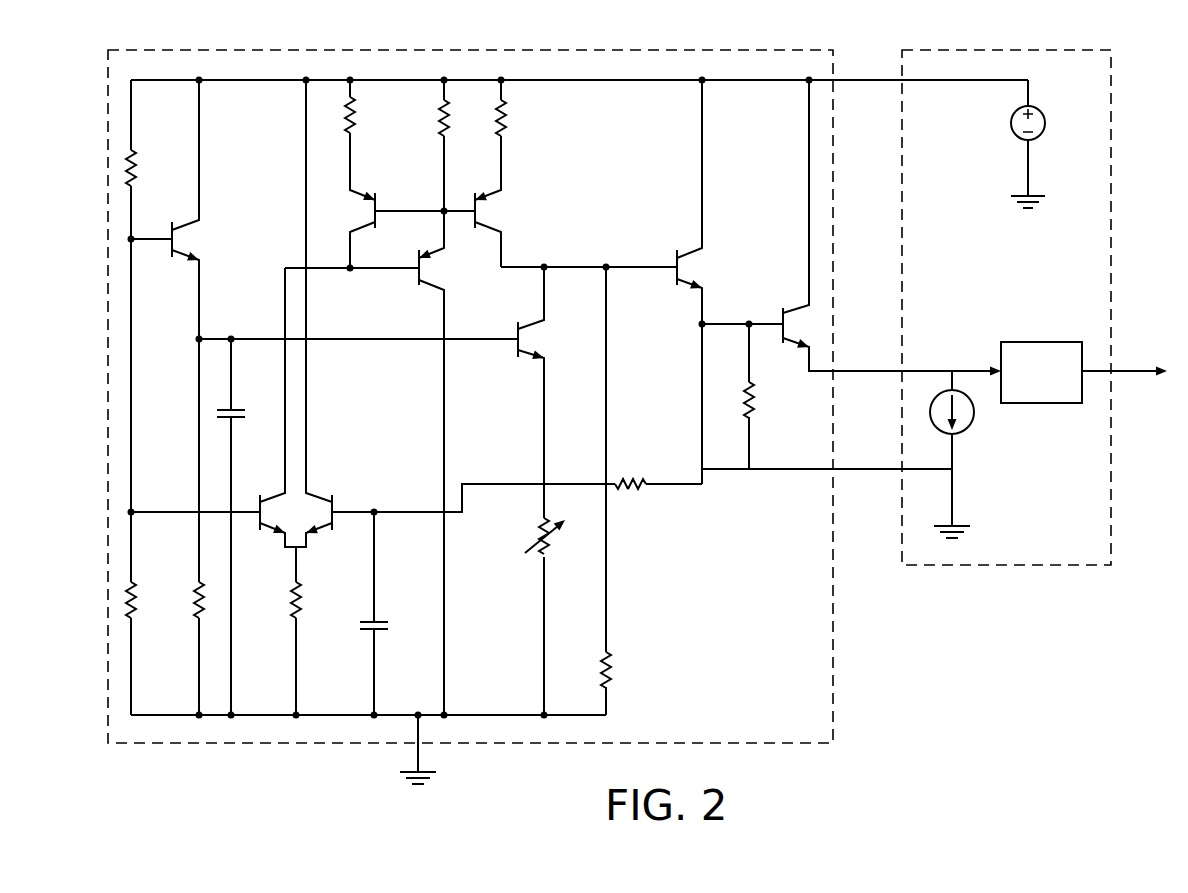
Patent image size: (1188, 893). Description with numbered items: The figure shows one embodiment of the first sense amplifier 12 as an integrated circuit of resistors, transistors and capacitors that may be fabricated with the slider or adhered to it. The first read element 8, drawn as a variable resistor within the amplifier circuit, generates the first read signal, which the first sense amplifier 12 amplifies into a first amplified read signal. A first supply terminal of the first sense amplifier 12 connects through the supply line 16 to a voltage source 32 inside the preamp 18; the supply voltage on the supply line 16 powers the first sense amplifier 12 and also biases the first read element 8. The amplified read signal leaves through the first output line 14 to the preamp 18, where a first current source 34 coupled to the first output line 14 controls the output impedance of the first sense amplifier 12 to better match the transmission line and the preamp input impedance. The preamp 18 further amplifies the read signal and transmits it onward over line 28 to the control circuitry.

The first sense amplifier 12 is at (568, 394).
The supply line 16 is at (868, 80).
The first output line 14 is at (867, 371).
The preamp 18 is at (958, 318).
The voltage source 32 is at (1003, 137).
The first current source 34 is at (982, 430).
The line 28 is at (1137, 373).
The first read element 8 is at (524, 529).